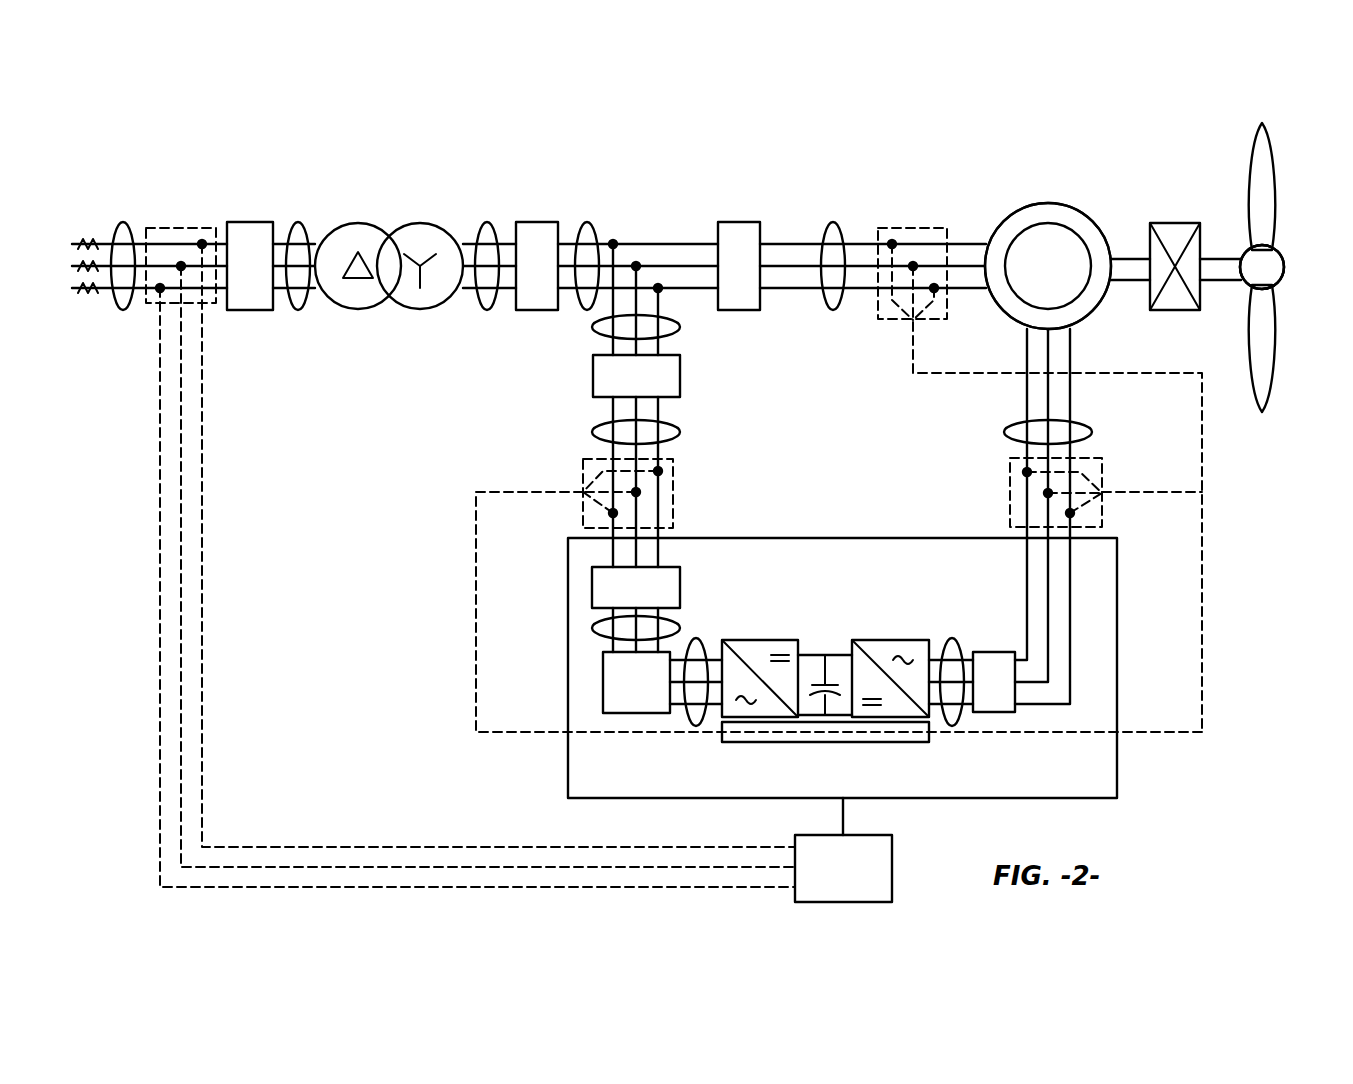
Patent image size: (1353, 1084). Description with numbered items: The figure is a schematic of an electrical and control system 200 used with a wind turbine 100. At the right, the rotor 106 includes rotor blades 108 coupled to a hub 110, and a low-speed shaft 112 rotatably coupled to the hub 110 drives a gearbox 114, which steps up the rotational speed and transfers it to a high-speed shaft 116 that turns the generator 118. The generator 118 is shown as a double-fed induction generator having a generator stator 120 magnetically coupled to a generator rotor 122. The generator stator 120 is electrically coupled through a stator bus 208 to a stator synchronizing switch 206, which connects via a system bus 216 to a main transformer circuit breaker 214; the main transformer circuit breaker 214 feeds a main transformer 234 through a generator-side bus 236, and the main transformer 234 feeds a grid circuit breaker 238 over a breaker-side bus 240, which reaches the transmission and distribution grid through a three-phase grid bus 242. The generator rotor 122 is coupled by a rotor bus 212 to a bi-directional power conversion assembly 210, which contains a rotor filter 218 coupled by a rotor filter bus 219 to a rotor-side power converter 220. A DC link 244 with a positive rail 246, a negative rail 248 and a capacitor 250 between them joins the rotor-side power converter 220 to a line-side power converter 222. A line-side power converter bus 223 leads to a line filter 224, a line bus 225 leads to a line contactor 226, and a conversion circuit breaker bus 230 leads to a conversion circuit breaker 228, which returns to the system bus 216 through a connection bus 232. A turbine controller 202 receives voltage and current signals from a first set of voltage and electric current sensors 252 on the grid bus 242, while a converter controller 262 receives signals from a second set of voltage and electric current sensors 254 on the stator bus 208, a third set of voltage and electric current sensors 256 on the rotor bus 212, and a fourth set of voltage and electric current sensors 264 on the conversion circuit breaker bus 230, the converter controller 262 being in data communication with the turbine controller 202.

The wind turbine 100 is at (1143, 155).
The rotor 106 is at (1285, 242).
The rotor blades 108 is at (1275, 180).
The hub 110 is at (1285, 268).
The low-speed shaft 112 is at (1222, 256).
The gearbox 114 is at (1175, 223).
The high-speed shaft 116 is at (1128, 256).
The generator 118 is at (1003, 207).
The generator stator 120 is at (1085, 210).
The generator rotor 122 is at (1041, 223).
The electrical and control system 200 is at (190, 152).
The turbine controller 202 is at (866, 883).
The stator synchronizing switch 206 is at (742, 222).
The stator bus 208 is at (833, 222).
The power conversion assembly 210 is at (1118, 668).
The rotor bus 212 is at (1090, 432).
The main transformer circuit breaker 214 is at (558, 222).
The system bus 216 is at (590, 222).
The rotor filter 218 is at (985, 652).
The rotor filter bus 219 is at (950, 640).
The rotor-side power converter 220 is at (930, 715).
The line-side power converter 222 is at (705, 718).
The line-side power converter bus 223 is at (696, 640).
The line filter 224 is at (603, 690).
The line bus 225 is at (592, 628).
The line contactor 226 is at (592, 590).
The conversion circuit breaker 228 is at (593, 378).
The conversion circuit breaker bus 230 is at (595, 437).
The connection bus 232 is at (680, 330).
The main transformer 234 is at (420, 223).
The generator-side bus 236 is at (487, 222).
The grid circuit breaker 238 is at (255, 222).
The breaker-side bus 240 is at (298, 222).
The grid bus 242 is at (123, 222).
The DC link 244 is at (812, 588).
The positive rail 246 is at (850, 640).
The negative rail 248 is at (838, 717).
The capacitor 250 is at (815, 650).
The first set of voltage and electric current sensors 252 is at (130, 318).
The second set of voltage and electric current sensors 254 is at (913, 228).
The third set of voltage and electric current sensors 256 is at (985, 492).
The converter controller 262 is at (890, 730).
The fourth set of voltage and electric current sensors 264 is at (673, 492).